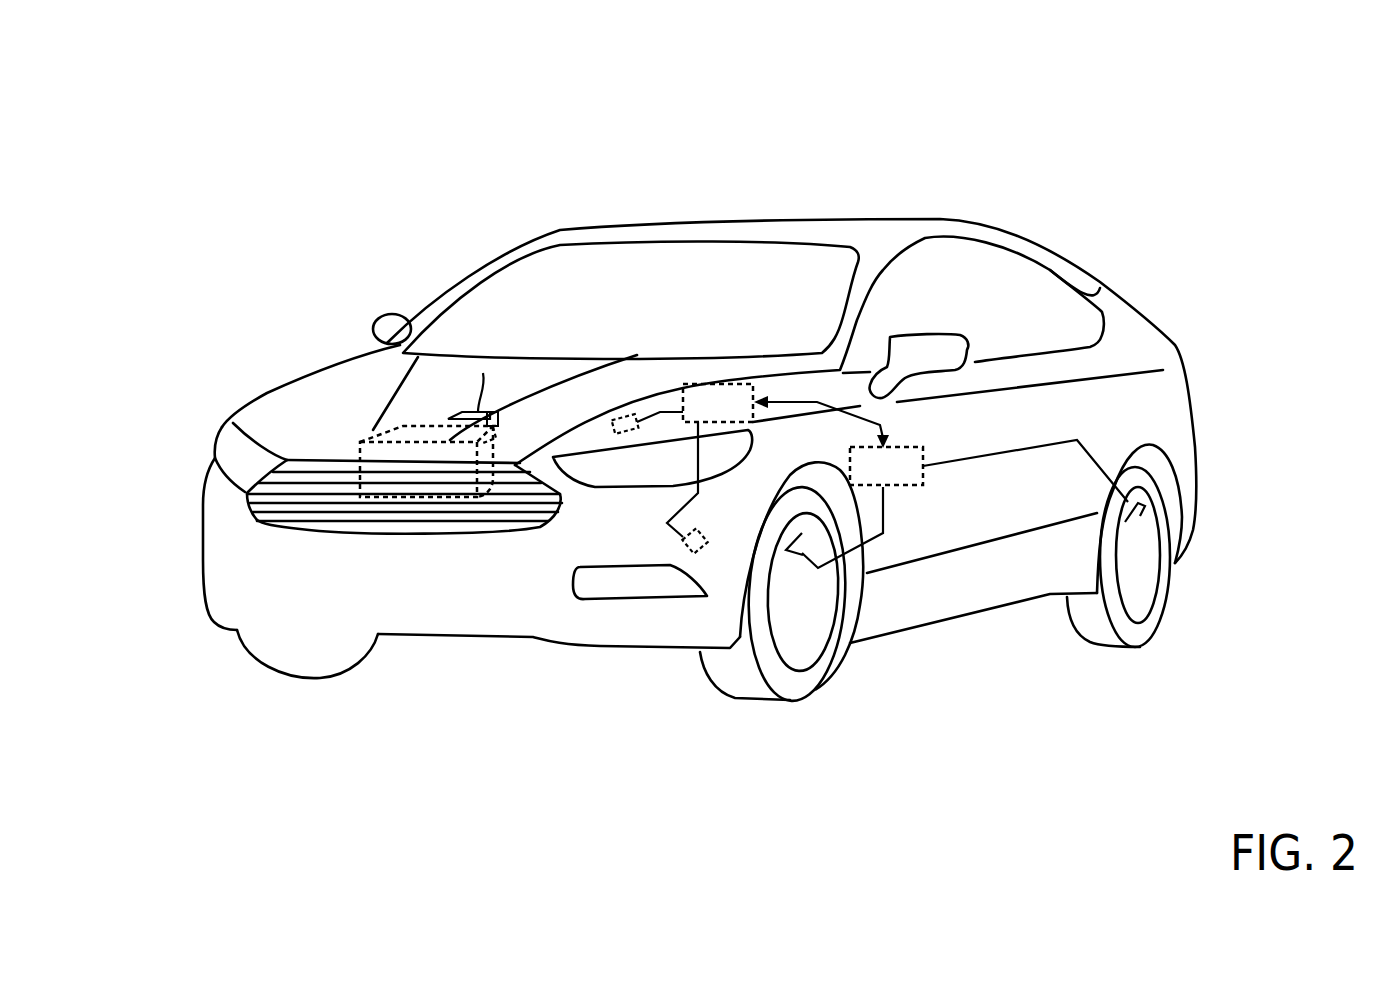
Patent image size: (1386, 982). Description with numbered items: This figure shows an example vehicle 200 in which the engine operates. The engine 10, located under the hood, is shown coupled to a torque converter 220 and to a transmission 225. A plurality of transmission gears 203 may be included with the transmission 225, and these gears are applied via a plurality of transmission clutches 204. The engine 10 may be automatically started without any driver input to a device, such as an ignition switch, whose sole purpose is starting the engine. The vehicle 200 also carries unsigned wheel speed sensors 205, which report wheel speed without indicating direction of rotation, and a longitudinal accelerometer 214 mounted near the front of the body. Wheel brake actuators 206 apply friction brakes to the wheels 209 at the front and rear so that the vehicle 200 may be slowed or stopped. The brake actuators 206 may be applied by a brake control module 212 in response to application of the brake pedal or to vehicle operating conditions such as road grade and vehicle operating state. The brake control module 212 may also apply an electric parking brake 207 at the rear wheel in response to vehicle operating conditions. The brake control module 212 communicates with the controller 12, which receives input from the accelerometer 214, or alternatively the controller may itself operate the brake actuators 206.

The vehicle 200 is at (126, 93).
The engine 10 is at (433, 481).
The controller 12 is at (735, 415).
The brake control module 212 is at (908, 478).
The longitudinal accelerometer 214 is at (619, 416).
The unsigned wheel speed sensors 205 is at (710, 537).
The transmission clutches 204 is at (499, 418).
The transmission gears 203 is at (492, 428).
The torque converter 220 is at (456, 416).
The transmission 225 is at (462, 388).
The wheel brake actuators 206 is at (788, 552).
The electric parking brake 207 is at (1128, 523).
The wheels 209 is at (812, 672).